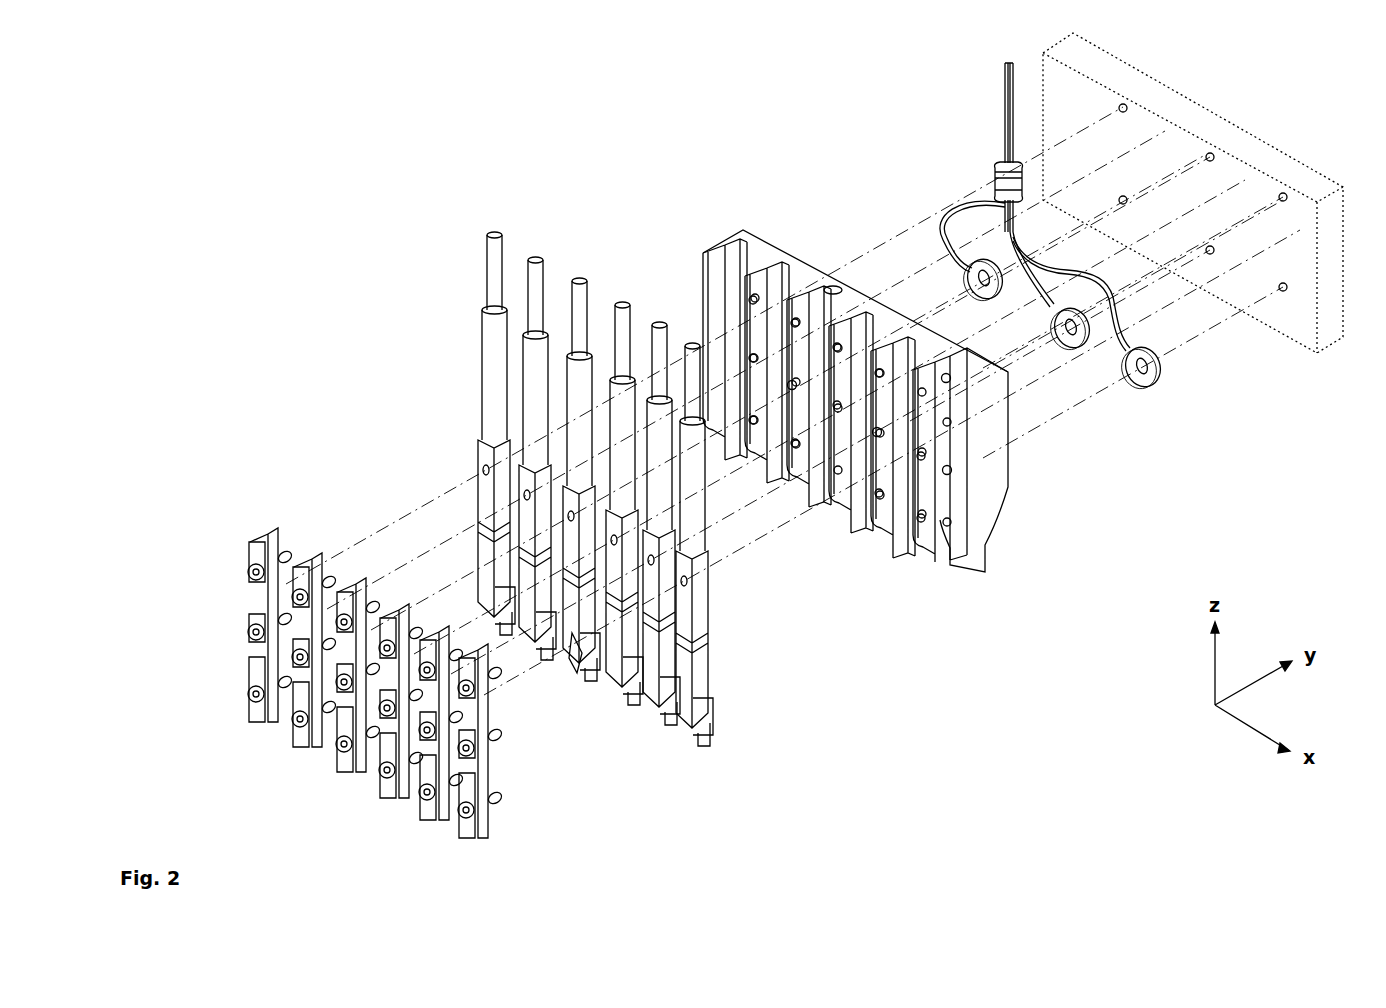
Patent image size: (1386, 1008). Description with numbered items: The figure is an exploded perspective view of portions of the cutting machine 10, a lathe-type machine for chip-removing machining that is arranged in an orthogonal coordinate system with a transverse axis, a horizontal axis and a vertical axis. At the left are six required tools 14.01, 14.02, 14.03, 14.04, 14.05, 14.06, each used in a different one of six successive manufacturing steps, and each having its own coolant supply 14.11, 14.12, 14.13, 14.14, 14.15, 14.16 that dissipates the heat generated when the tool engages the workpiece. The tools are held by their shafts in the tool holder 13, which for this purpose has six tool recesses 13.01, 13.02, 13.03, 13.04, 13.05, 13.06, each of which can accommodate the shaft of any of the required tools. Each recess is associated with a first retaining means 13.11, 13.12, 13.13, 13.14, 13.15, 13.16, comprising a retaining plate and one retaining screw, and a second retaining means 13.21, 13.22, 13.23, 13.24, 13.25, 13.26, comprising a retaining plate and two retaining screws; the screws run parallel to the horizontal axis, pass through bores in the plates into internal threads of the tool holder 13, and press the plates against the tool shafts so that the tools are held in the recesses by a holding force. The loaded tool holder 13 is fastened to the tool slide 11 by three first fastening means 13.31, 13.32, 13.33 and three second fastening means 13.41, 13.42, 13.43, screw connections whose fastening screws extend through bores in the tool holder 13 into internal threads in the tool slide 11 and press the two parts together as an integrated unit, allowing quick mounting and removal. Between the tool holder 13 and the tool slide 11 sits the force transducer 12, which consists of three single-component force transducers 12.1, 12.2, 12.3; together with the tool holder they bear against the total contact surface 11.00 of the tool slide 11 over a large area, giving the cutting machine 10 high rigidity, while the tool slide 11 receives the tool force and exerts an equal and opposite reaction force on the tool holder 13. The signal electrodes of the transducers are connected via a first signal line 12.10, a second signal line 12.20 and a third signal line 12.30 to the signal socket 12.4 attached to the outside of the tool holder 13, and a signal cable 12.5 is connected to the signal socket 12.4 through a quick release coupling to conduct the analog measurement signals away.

The cutting machine 10 is at (235, 165).
The tool slide 11 is at (1303, 325).
The total contact surface of the tool slide 11.00 is at (1237, 185).
The force transducer 12 is at (870, 160).
The first single-component force transducer 12.1 is at (970, 278).
The second single-component force transducer 12.2 is at (1058, 322).
The third single-component force transducer 12.3 is at (1130, 362).
The first signal line 12.10 is at (945, 205).
The second signal line 12.20 is at (1032, 305).
The third signal line 12.30 is at (1118, 330).
The signal socket 12.4 is at (992, 195).
The signal cable 12.5 is at (1000, 175).
The tool holder 13 is at (697, 172).
The first tool recess 13.01 is at (712, 375).
The second tool recess 13.02 is at (742, 360).
The third tool recess 13.03 is at (831, 426).
The fourth tool recess 13.04 is at (868, 420).
The fifth tool recess 13.05 is at (909, 487).
The sixth tool recess 13.06 is at (1004, 460).
The first retaining means 13.11 is at (201, 689).
The first retaining means 13.12 is at (238, 722).
The first retaining means 13.13 is at (295, 758).
The first retaining means 13.14 is at (341, 788).
The first retaining means 13.15 is at (401, 822).
The first retaining means 13.16 is at (525, 810).
The second retaining means 13.21 is at (201, 580).
The second retaining means 13.22 is at (273, 543).
The second retaining means 13.23 is at (325, 567).
The second retaining means 13.24 is at (369, 594).
The second retaining means 13.25 is at (422, 615).
The second retaining means 13.26 is at (524, 721).
The first fastening means 13.31 is at (702, 281).
The first fastening means 13.32 is at (730, 291).
The first fastening means 13.33 is at (1018, 486).
The second fastening means 13.41 is at (778, 243).
The second fastening means 13.42 is at (862, 335).
The second fastening means 13.43 is at (1019, 394).
The first tool 14.01 is at (445, 566).
The second tool 14.02 is at (548, 667).
The third tool 14.03 is at (592, 692).
The fourth tool 14.04 is at (636, 719).
The fifth tool 14.05 is at (677, 749).
The sixth tool 14.06 is at (760, 722).
The coolant supply 14.11 is at (445, 433).
The coolant supply 14.12 is at (514, 435).
The coolant supply 14.13 is at (567, 457).
The coolant supply 14.14 is at (613, 490).
The coolant supply 14.15 is at (656, 525).
The coolant supply 14.16 is at (751, 544).